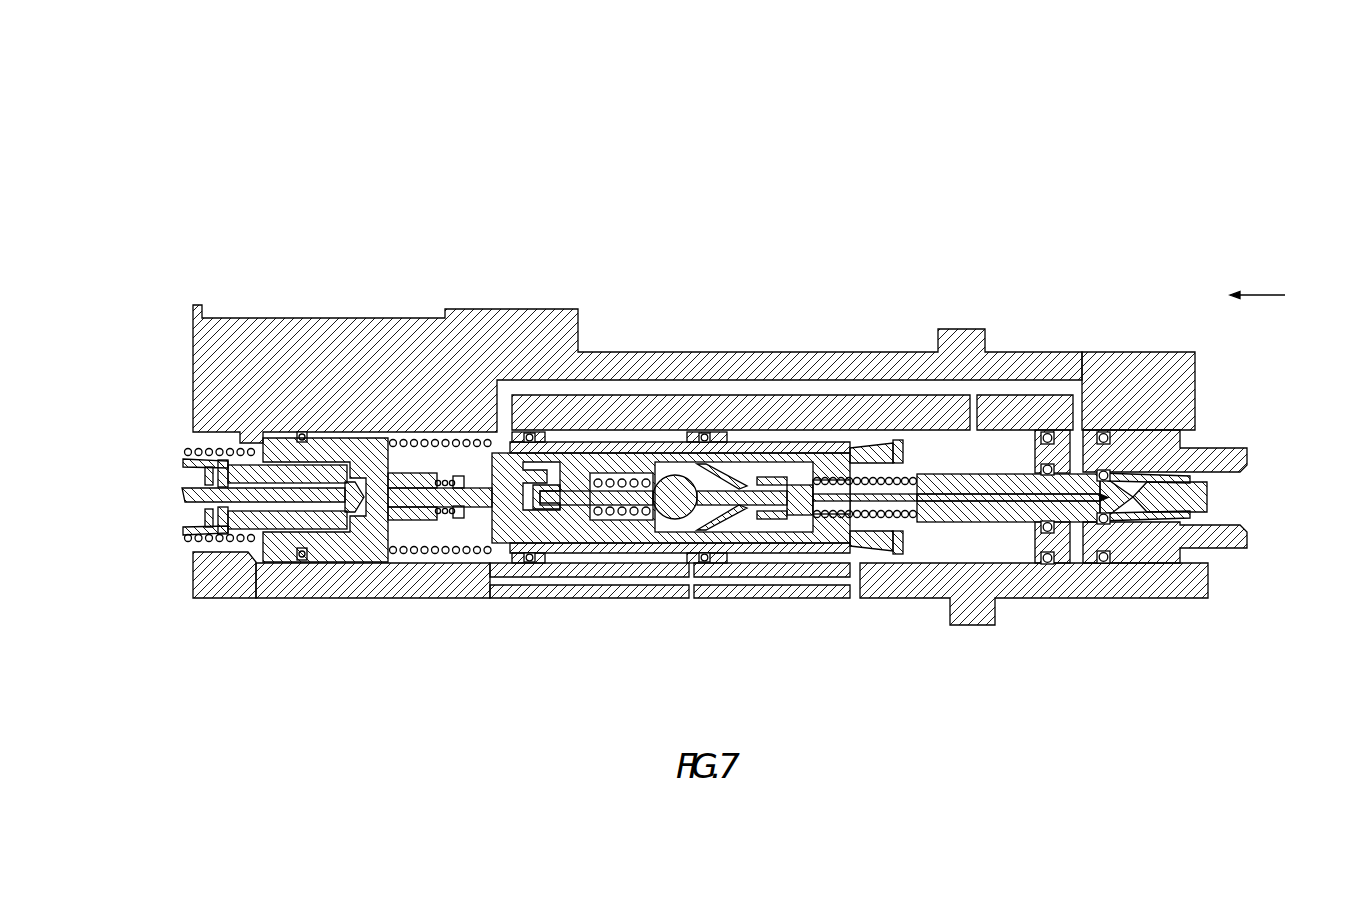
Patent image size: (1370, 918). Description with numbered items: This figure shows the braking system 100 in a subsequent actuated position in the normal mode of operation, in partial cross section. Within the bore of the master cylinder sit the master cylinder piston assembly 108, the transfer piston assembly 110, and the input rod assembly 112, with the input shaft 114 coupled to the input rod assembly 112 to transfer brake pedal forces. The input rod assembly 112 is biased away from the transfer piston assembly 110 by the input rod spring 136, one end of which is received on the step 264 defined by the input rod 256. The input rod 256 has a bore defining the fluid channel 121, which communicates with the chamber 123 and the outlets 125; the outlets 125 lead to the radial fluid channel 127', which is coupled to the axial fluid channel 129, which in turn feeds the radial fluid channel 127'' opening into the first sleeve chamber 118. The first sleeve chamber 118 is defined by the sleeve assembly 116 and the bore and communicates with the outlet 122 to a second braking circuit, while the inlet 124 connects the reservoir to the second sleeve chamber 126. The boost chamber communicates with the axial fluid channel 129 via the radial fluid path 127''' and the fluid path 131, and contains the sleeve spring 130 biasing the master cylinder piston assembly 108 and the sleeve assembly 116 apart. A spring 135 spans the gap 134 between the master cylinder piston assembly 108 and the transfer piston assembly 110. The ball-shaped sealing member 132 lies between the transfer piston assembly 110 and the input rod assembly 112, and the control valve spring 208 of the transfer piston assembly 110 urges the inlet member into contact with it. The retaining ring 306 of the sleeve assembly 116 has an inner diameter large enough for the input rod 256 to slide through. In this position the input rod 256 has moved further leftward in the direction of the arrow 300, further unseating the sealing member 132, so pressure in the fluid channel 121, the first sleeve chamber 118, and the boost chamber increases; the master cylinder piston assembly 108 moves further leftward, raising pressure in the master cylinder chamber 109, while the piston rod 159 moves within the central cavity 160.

The braking system 100 is at (729, 374).
The master cylinder piston assembly 108 is at (250, 443).
The master cylinder chamber 109 is at (255, 600).
The transfer piston assembly 110 is at (483, 532).
The input rod assembly 112 is at (1228, 422).
The input shaft 114 is at (1248, 540).
The sleeve assembly 116 is at (856, 436).
The first sleeve chamber 118 is at (780, 437).
The fluid channel 121 is at (947, 501).
The outlet 122 is at (857, 598).
The chamber 123 is at (1107, 558).
The inlet 124 is at (691, 598).
The outlets 125 is at (1088, 528).
The second sleeve chamber 126 is at (588, 438).
The radial fluid channel 127' is at (1137, 375).
The radial fluid channel 127'' is at (1024, 374).
The radial fluid path 127''' is at (738, 348).
The axial fluid channel 129 is at (698, 388).
The sleeve spring 130 is at (473, 555).
The fluid path 131 is at (550, 584).
The sealing member 132 is at (690, 488).
The gap 134 is at (388, 514).
The spring 135 is at (442, 514).
The input rod spring 136 is at (913, 556).
The piston rod 159 is at (185, 503).
The central cavity 160 is at (289, 440).
The control valve spring 208 is at (670, 520).
The input rod 256 is at (995, 501).
The step 264 is at (920, 473).
The arrow 300 is at (1283, 291).
The retaining ring 306 is at (905, 556).